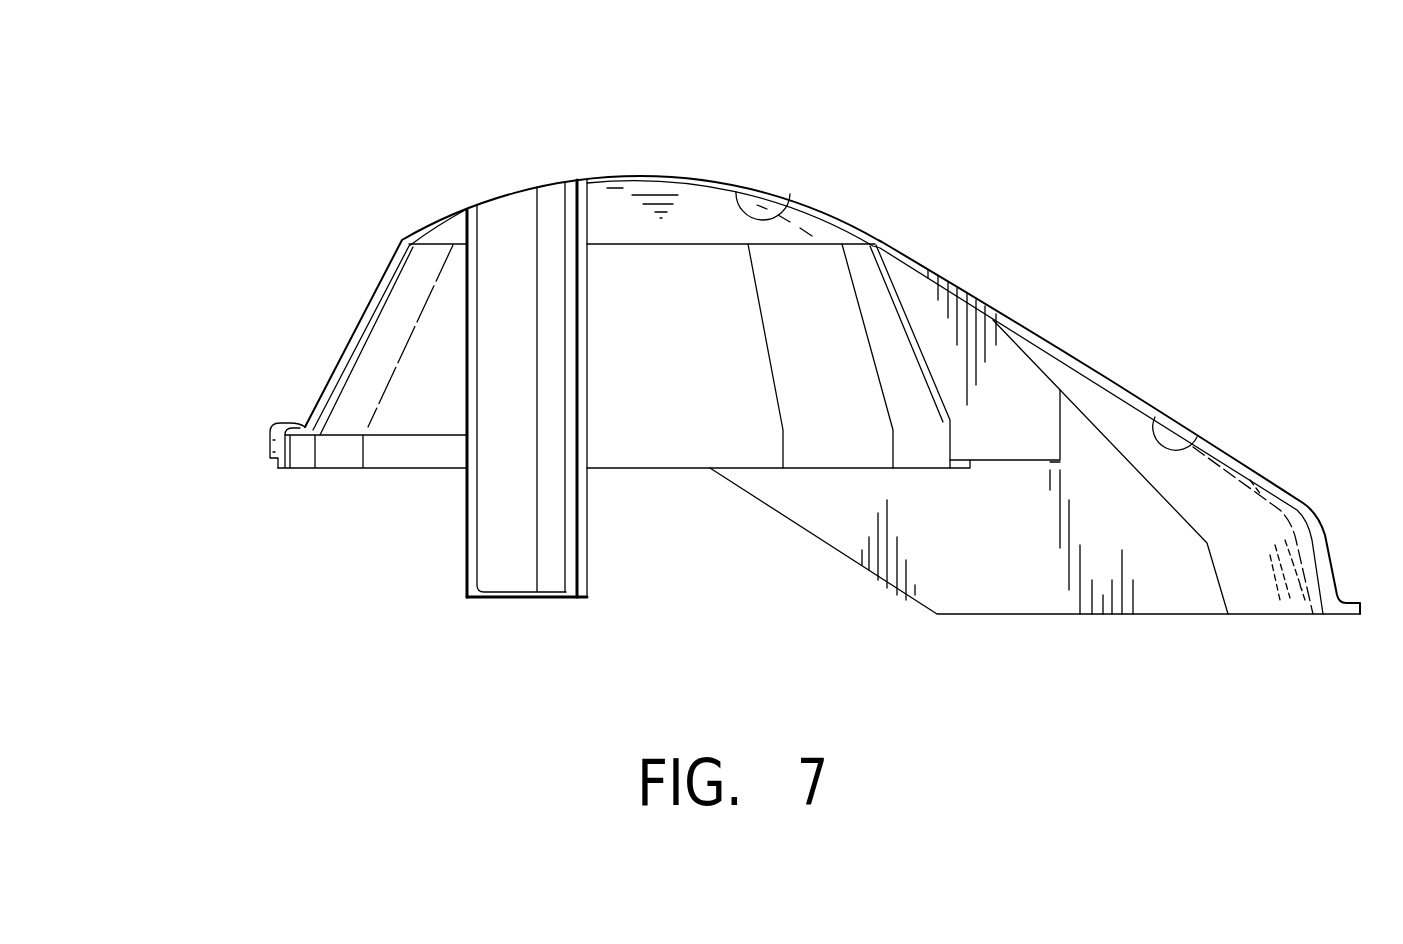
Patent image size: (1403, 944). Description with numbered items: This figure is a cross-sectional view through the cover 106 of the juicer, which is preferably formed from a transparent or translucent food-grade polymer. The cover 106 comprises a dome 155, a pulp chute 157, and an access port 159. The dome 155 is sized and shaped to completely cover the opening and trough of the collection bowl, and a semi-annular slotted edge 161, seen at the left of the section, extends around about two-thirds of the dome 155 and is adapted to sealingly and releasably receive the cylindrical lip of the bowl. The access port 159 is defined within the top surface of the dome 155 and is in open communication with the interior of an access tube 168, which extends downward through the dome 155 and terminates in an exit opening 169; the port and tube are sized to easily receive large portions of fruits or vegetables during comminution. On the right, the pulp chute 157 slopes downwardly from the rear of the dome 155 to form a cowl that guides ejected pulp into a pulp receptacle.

The cover 106 is at (990, 178).
The dome 155 is at (797, 203).
The pulp chute 157 is at (1156, 410).
The access port 159 is at (574, 216).
The semi-annular slotted edge 161 is at (255, 452).
The access tube 168 is at (587, 505).
The exit opening 169 is at (539, 598).